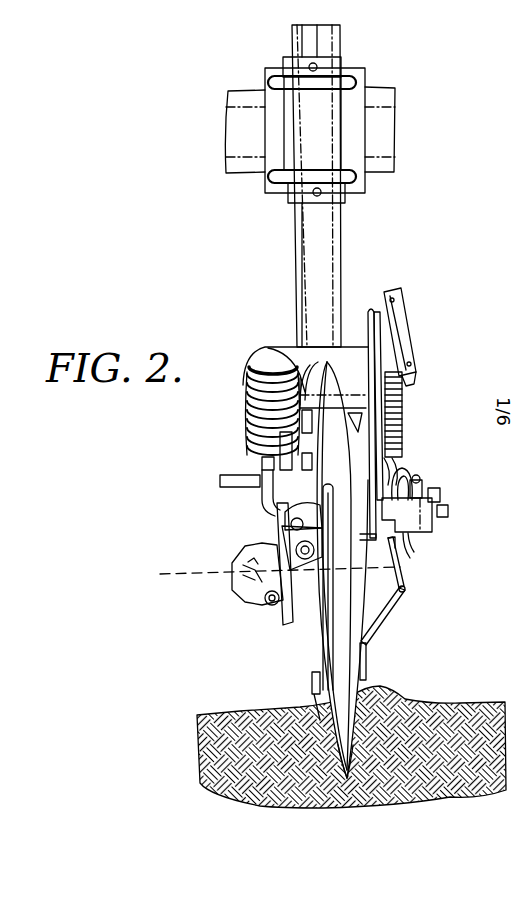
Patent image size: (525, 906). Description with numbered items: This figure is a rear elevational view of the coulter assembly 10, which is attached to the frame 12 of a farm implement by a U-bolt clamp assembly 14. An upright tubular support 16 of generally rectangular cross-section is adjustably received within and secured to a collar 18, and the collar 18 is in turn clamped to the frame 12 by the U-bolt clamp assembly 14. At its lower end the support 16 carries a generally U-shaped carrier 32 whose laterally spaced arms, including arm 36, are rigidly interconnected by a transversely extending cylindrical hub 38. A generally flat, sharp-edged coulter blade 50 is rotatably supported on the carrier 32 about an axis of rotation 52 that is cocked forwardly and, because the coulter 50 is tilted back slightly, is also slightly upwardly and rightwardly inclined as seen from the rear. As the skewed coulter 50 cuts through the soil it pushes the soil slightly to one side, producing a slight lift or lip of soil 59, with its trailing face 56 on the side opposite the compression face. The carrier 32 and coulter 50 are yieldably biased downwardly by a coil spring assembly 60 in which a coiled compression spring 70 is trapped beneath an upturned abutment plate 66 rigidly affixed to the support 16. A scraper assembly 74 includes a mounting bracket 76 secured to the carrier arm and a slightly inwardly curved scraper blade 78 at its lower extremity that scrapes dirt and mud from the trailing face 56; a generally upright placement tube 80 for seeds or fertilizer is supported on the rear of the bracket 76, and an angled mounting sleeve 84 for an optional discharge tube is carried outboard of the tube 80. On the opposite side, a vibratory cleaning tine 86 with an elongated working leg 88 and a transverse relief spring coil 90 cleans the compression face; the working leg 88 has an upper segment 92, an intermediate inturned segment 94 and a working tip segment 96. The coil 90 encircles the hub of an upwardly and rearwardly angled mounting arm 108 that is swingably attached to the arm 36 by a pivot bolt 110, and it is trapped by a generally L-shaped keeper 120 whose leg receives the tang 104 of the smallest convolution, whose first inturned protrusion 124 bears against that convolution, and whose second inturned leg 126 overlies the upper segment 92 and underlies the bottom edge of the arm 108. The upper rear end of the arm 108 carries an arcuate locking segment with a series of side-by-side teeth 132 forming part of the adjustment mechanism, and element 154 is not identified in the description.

The coulter assembly 10 is at (222, 247).
The frame 12 is at (385, 137).
The U-bolt clamp assembly 14 is at (372, 80).
The upright tubular support 16 is at (305, 232).
The collar 18 is at (290, 97).
The carrier 32 is at (361, 308).
The arm 36 is at (381, 353).
The cylindrical hub 38 is at (270, 352).
The coulter blade 50 is at (370, 602).
The axis of rotation 52 is at (165, 574).
The trailing face 56 is at (320, 358).
The lip of soil 59 is at (395, 691).
The coil spring assembly 60 is at (238, 413).
The abutment plate 66 is at (248, 372).
The coiled compression spring 70 is at (250, 440).
The scraper assembly 74 is at (298, 684).
The mounting bracket 76 is at (280, 535).
The scraper blade 78 is at (335, 757).
The placement tube 80 is at (330, 660).
The mounting sleeve 84 is at (266, 606).
The vibratory cleaning tine 86 is at (426, 600).
The working leg portion 88 is at (411, 578).
The relief spring coil portion 90 is at (422, 459).
The upper segment 92 is at (392, 556).
The intermediate segment 94 is at (378, 628).
The working tip segment 96 is at (366, 667).
The tang 104 is at (447, 512).
The arm 108 is at (390, 468).
The pivot bolt 110 is at (438, 495).
The keeper 120 is at (442, 530).
The first inturned protrusion 124 is at (419, 483).
The second inturned leg 126 is at (411, 540).
The teeth 132 is at (400, 405).
The plate 154 is at (395, 297).